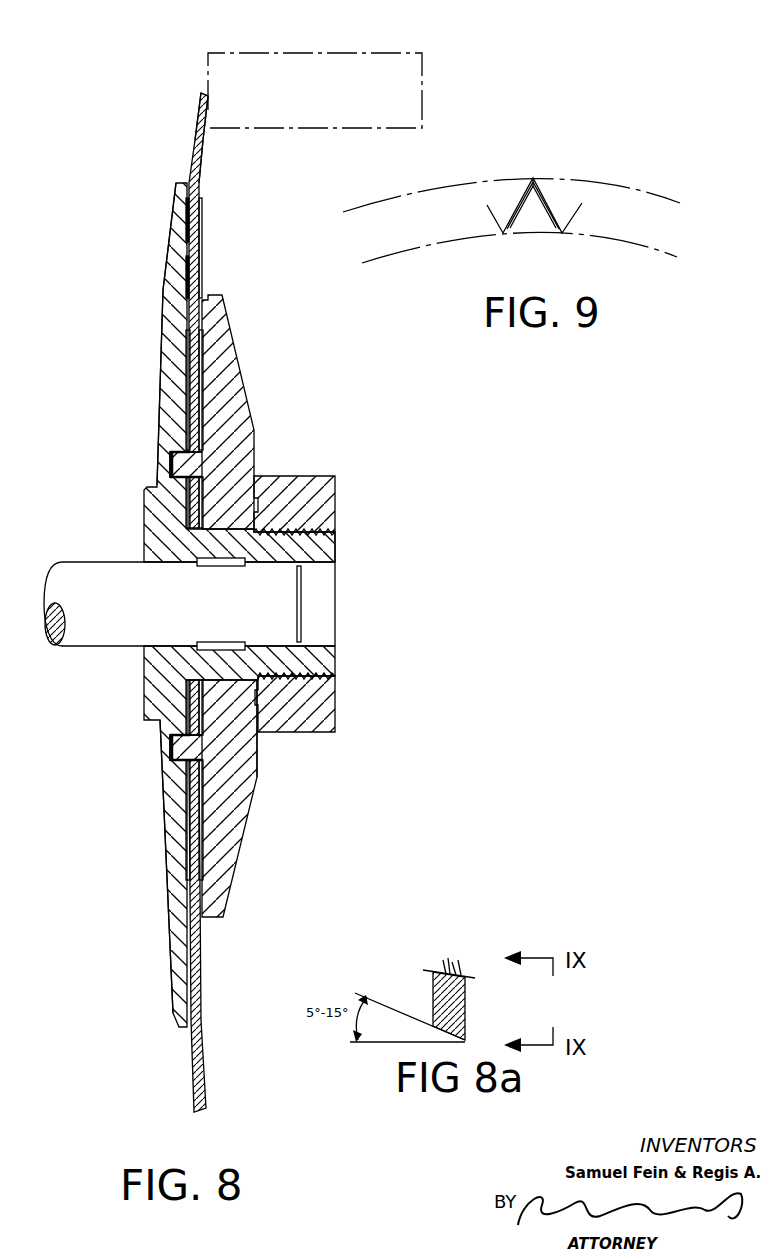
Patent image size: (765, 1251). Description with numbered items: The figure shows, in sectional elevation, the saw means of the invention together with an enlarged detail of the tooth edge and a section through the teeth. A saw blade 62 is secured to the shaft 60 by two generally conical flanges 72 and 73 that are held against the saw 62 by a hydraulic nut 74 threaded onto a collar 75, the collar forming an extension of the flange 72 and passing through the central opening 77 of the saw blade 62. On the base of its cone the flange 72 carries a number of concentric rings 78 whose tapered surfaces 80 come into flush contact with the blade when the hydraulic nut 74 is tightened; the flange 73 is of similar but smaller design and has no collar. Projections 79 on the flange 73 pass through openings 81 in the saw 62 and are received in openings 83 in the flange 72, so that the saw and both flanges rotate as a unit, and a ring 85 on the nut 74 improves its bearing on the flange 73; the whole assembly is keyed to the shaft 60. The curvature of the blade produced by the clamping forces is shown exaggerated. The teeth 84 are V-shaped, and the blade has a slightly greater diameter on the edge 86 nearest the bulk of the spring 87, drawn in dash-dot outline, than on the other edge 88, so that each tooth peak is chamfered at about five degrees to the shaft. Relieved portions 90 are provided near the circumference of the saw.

In FIG. 8, the shaft 60 is at (88, 561).
In FIG. 8, the saw blade 62 is at (207, 1068).
In FIG. 8a, the saw blade 62 is at (433, 990).
In FIG. 8, the flange 72 is at (160, 360).
In FIG. 8, the flange 73 is at (243, 380).
In FIG. 8, the hydraulic nut 74 is at (310, 477).
In FIG. 8, the collar 75 is at (337, 551).
In FIG. 8, the central opening 77 is at (148, 495).
In FIG. 8, the concentric rings 78 is at (190, 247).
In FIG. 8, the projections 79 is at (178, 466).
In FIG. 8, the tapered surfaces 80 is at (198, 300).
In FIG. 8, the openings 81 is at (225, 432).
In FIG. 8, the openings 83 is at (177, 451).
In FIG. 9, the teeth 84 is at (528, 212).
In FIG. 8, the ring 85 is at (258, 702).
In FIG. 8, the edge 86 is at (207, 95).
In FIG. 9, the edge 86 is at (533, 178).
In FIG. 8, the spring 87 is at (343, 52).
In FIG. 8, the edge 88 is at (200, 98).
In FIG. 9, the edge 88 is at (540, 196).
In FIG. 8, the relieved portions 90 is at (204, 147).